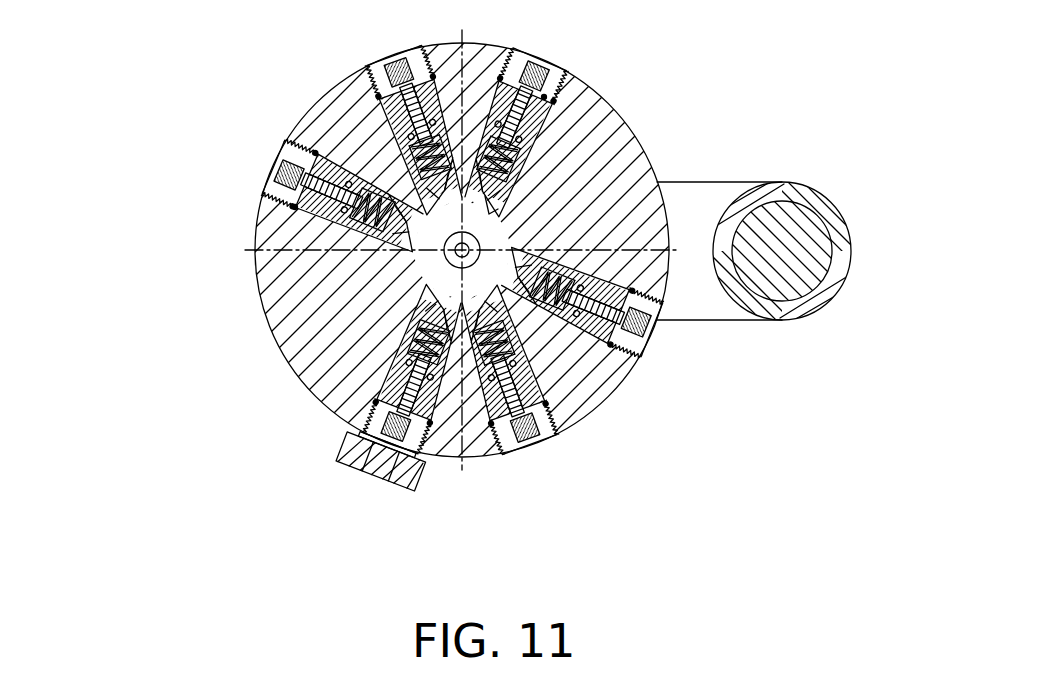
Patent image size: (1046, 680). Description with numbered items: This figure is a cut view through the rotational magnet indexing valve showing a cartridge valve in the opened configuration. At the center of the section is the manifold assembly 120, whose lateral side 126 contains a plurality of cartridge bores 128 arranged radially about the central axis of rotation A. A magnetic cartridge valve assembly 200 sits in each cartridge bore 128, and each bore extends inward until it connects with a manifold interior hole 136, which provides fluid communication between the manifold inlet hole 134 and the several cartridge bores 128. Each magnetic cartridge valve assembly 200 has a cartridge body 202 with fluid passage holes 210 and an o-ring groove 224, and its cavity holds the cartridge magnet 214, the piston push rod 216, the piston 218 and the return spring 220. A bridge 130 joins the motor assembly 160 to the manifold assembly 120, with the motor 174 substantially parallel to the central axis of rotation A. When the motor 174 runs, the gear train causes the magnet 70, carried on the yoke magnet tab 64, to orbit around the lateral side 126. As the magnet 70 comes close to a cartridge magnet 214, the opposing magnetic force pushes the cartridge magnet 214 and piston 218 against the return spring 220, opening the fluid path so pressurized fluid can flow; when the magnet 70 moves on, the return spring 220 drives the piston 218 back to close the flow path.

The manifold assembly 120 is at (633, 121).
The bridge 130 is at (713, 182).
The motor assembly 160 is at (858, 243).
The motor 174 is at (838, 206).
The manifold interior hole 136 is at (552, 129).
The cartridge body 202 is at (352, 295).
The fluid passage hole 210 is at (345, 317).
The magnetic cartridge valve assembly 200 is at (661, 333).
The lateral side 126 is at (620, 384).
The manifold inlet hole 134 is at (578, 352).
The return spring 220 is at (390, 332).
The o-ring groove 224 is at (345, 337).
The cartridge magnet 214 is at (421, 440).
The piston push rod 216 is at (440, 437).
The piston 218 is at (425, 402).
The cartridge bore 128 is at (435, 420).
The yoke magnet tab 64 is at (362, 428).
The magnet 70 is at (440, 414).
The central axis of rotation A is at (452, 243).